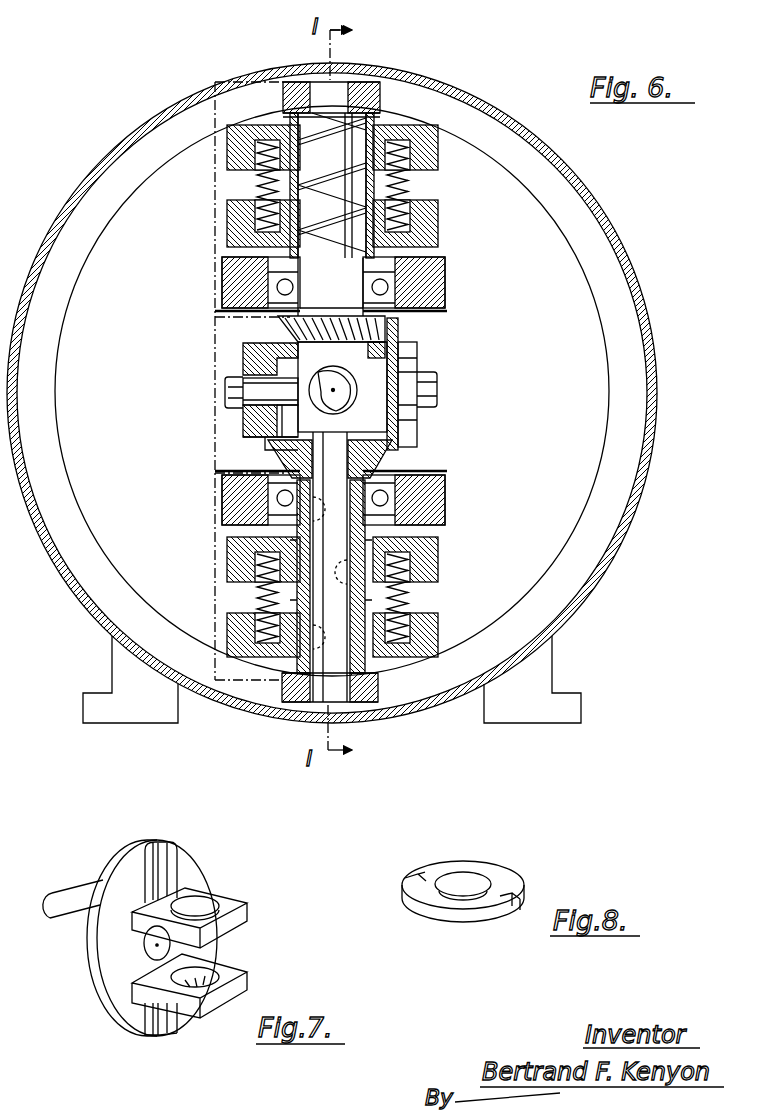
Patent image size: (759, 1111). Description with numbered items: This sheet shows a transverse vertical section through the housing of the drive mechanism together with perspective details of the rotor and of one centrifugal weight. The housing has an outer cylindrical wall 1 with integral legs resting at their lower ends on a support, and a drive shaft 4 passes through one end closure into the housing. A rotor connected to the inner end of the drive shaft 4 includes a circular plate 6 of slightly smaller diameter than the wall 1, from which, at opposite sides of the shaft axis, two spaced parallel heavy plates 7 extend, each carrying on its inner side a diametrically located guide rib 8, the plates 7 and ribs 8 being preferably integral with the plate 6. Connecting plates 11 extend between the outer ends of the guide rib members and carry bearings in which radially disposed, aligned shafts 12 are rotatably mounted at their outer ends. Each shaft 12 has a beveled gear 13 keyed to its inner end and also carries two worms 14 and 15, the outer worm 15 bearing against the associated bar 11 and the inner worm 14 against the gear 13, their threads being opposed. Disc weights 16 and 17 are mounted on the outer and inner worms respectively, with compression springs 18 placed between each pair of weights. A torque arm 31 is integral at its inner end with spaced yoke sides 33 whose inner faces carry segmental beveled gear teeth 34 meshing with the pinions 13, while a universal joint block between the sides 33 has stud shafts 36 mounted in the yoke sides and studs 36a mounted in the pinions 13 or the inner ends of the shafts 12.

In FIG. 6, the outer cylindrical wall 1 is at (612, 257).
In FIG. 6, the circular plate 6 is at (580, 333).
In FIG. 7, the circular plate 6 is at (100, 968).
In FIG. 6, the plates 7 is at (443, 286).
In FIG. 7, the plates 7 is at (215, 900).
In FIG. 7, the guide ribs 8 is at (165, 864).
In FIG. 7, the drive shaft 4 is at (68, 910).
In FIG. 6, the connecting plates 11 is at (383, 86).
In FIG. 6, the shafts 12 is at (400, 318).
In FIG. 6, the beveled gear 13 is at (310, 325).
In FIG. 6, the worm 14 is at (334, 232).
In FIG. 6, the worm 15 is at (372, 123).
In FIG. 6, the disc weight 16 is at (438, 150).
In FIG. 8, the disc weight 16 is at (487, 866).
In FIG. 6, the disc weight 17 is at (440, 230).
In FIG. 6, the compression springs 18 is at (260, 183).
In FIG. 6, the torque arm 31 is at (338, 392).
In FIG. 6, the yoke sides 33 is at (268, 346).
In FIG. 6, the segmental beveled gear teeth 34 is at (400, 340).
In FIG. 6, the stud shafts 36 is at (272, 402).
In FIG. 6, the studs 36a is at (282, 478).